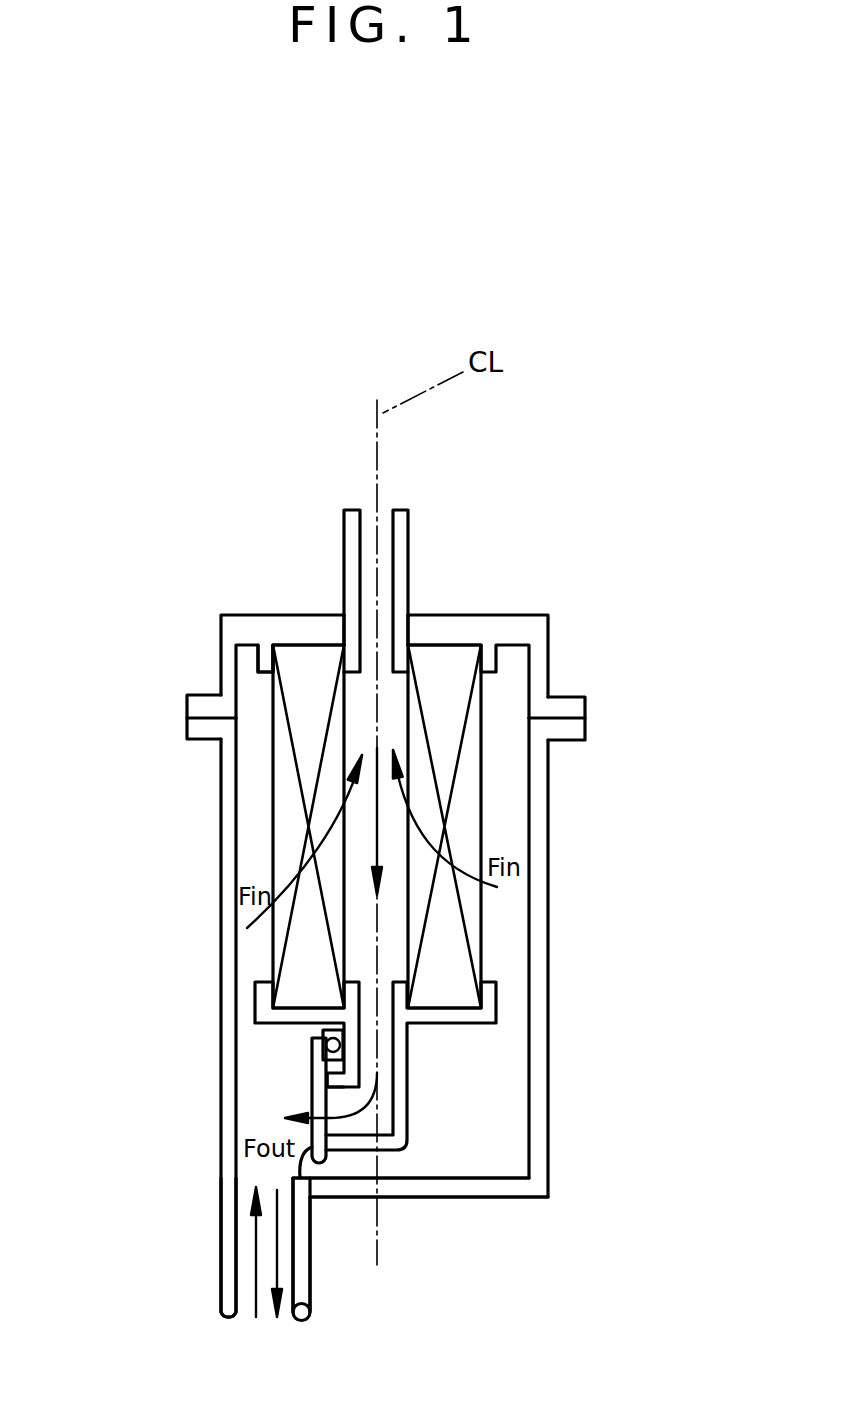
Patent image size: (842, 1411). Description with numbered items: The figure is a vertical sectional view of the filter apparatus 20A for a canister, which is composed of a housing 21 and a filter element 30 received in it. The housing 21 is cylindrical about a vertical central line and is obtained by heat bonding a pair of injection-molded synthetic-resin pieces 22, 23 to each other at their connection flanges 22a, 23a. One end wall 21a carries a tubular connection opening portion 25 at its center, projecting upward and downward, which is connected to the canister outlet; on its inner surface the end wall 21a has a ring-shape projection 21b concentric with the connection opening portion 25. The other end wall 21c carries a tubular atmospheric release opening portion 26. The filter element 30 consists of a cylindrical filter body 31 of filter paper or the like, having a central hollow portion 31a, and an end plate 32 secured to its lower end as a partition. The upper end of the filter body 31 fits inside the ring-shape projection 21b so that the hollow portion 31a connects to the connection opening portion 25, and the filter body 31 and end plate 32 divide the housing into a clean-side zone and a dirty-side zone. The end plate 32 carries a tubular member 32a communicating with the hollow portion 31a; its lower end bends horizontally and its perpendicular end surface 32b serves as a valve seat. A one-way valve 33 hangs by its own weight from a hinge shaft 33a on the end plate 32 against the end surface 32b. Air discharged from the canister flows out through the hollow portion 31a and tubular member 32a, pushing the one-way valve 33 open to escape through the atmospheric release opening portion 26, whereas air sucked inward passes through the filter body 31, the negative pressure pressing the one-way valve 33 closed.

The filter apparatus 20A is at (720, 456).
The housing 21 is at (585, 815).
The end wall 21a is at (468, 628).
The ring-shape projection 21b is at (268, 662).
The other end wall 21c is at (440, 1190).
The housing piece 22 is at (222, 658).
The connection flange 22a is at (205, 705).
The housing piece 23 is at (218, 787).
The connection flange 23a is at (202, 732).
The connection opening portion 25 is at (403, 572).
The atmospheric release opening portion 26 is at (227, 1283).
The filter element 30 is at (104, 870).
The filter body 31 is at (278, 833).
The hollow portion 31a is at (385, 928).
The end plate 32 is at (262, 1033).
The tubular member 32a is at (400, 1108).
The end surface 32b is at (303, 1163).
The one-way valve 33 is at (310, 1080).
The hinge shaft 33a is at (330, 1047).